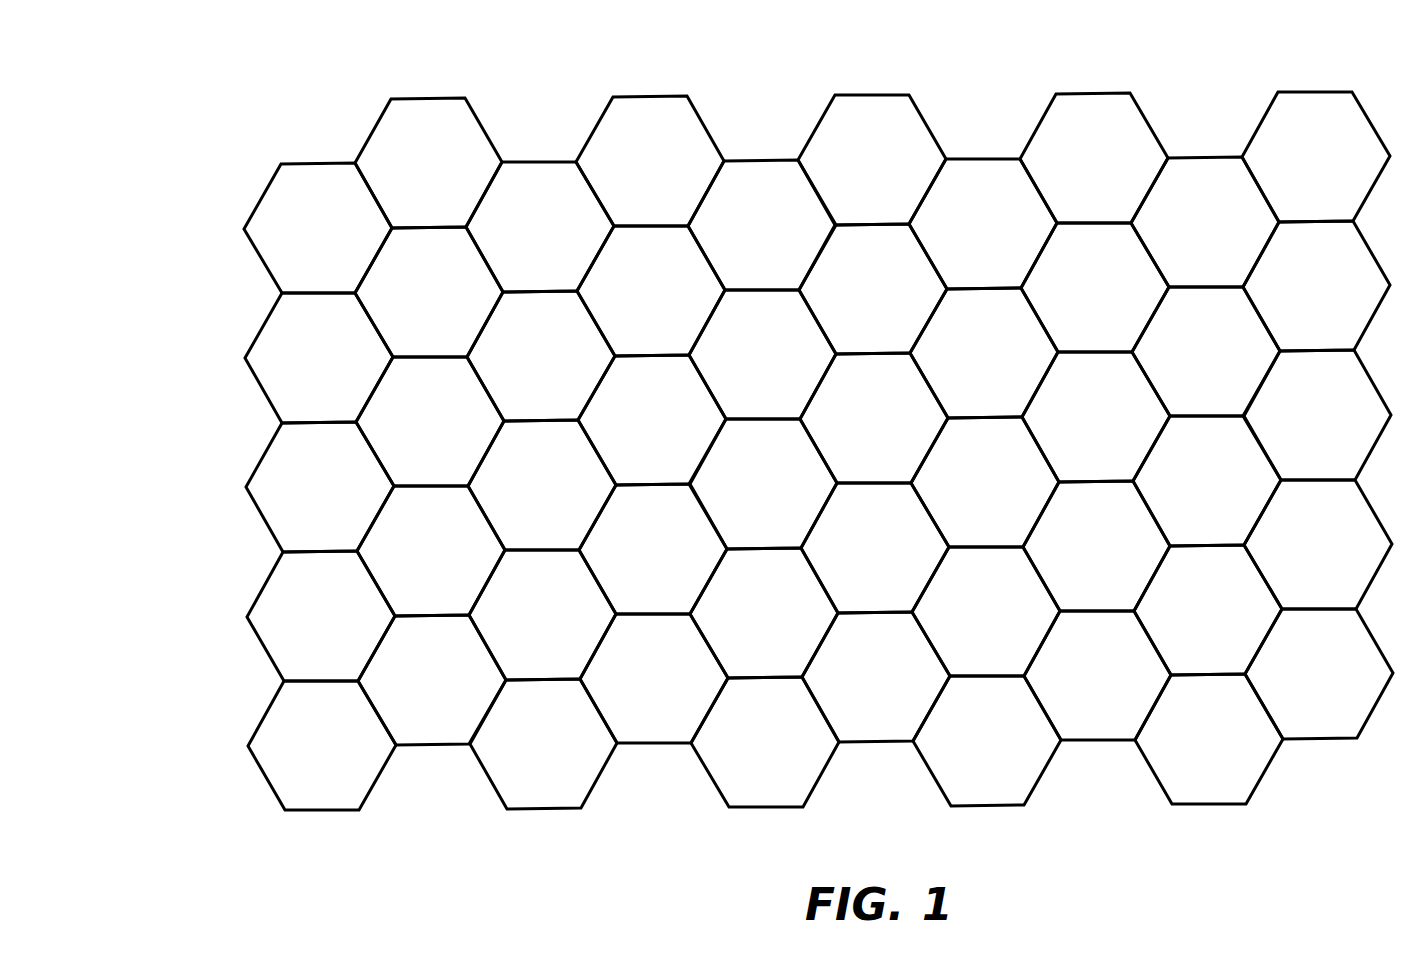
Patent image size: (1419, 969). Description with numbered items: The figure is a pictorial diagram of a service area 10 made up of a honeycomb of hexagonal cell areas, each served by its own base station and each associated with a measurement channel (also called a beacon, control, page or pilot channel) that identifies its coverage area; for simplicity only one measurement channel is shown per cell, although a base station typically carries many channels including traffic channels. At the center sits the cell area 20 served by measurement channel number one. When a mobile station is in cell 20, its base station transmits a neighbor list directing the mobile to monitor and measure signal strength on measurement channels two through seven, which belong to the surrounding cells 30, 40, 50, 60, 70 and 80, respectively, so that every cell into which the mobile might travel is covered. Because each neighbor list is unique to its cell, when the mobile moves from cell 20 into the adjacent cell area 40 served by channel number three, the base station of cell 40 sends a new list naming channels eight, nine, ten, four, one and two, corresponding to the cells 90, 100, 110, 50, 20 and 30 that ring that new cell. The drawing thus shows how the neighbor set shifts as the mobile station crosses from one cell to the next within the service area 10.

The service area 10 is at (286, 96).
The cell area served by measurement channel number one 20 is at (757, 550).
The cell area served by measurement channel number two 30 is at (765, 288).
The cell area served by measurement channel number three 40 is at (855, 348).
The cell area served by measurement channel number four 50 is at (883, 616).
The cell area served by measurement channel number five 60 is at (763, 680).
The cell area served by measurement channel number six 70 is at (597, 588).
The cell area served by measurement channel number seven 80 is at (632, 353).
The cell area served by measurement channel number eight 90 is at (925, 242).
The cell area served by measurement channel number nine 100 is at (1037, 313).
The cell area served by measurement channel number ten 110 is at (1040, 520).